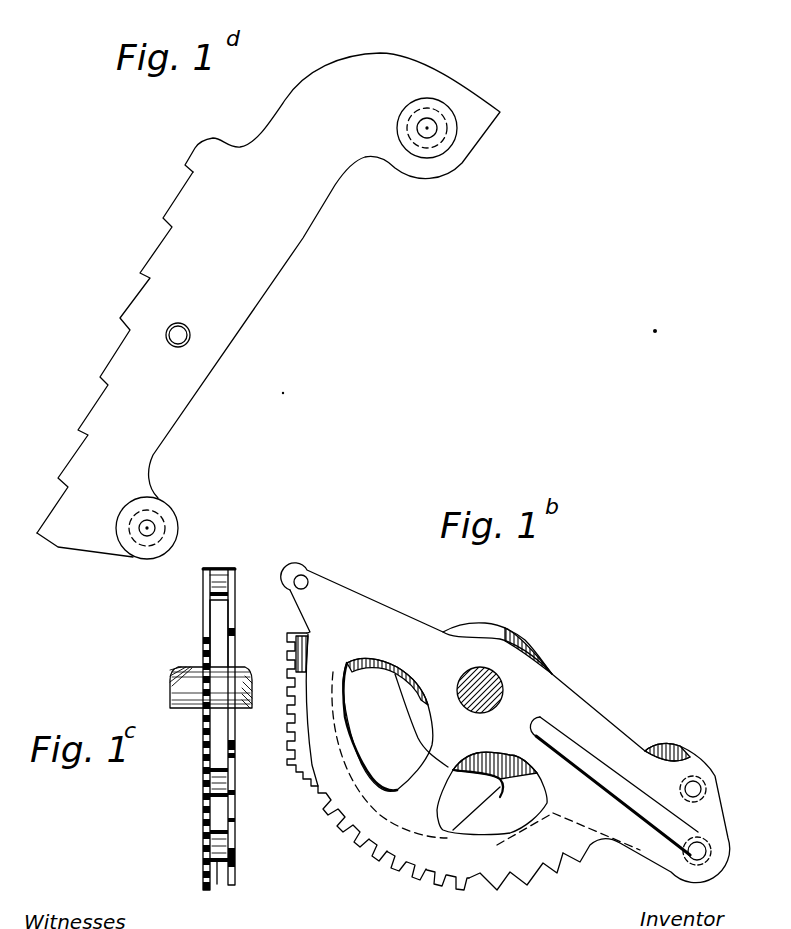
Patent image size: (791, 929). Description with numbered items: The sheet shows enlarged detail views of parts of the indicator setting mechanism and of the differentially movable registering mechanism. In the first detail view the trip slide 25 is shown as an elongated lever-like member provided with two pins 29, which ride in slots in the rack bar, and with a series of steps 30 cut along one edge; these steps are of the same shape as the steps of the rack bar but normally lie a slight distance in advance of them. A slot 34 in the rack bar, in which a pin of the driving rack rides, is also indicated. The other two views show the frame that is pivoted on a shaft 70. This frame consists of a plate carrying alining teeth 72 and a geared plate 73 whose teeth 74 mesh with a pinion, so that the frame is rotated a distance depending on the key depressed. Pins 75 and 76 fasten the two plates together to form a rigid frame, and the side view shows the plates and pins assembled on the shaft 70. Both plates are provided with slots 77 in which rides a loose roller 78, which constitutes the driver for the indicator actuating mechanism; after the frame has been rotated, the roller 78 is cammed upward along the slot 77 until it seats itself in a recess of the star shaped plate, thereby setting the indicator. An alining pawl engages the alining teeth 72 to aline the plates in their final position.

In FIG. 1D, the trip slide 25 is at (258, 279).
In FIG. 1D, the pins 29 is at (400, 123).
In FIG. 1D, the steps 30 is at (124, 330).
In FIG. 1D, the slot 34 is at (177, 345).
In FIG. 1C, the shaft 70 is at (183, 682).
In FIG. 1B, the shaft 70 is at (465, 706).
In FIG. 1C, the alining teeth 72 is at (231, 857).
In FIG. 1B, the alining teeth 72 is at (515, 880).
In FIG. 1C, the geared plate 73 is at (208, 607).
In FIG. 1B, the geared plate 73 is at (497, 806).
In FIG. 1C, the teeth 74 is at (233, 618).
In FIG. 1B, the teeth 74 is at (390, 620).
In FIG. 1C, the pin 75 is at (212, 778).
In FIG. 1B, the pin 75 is at (697, 780).
In FIG. 1C, the pin 76 is at (220, 577).
In FIG. 1B, the pin 76 is at (303, 577).
In FIG. 1B, the slots 77 is at (558, 742).
In FIG. 1C, the loose roller 78 is at (217, 876).
In FIG. 1B, the loose roller 78 is at (697, 852).